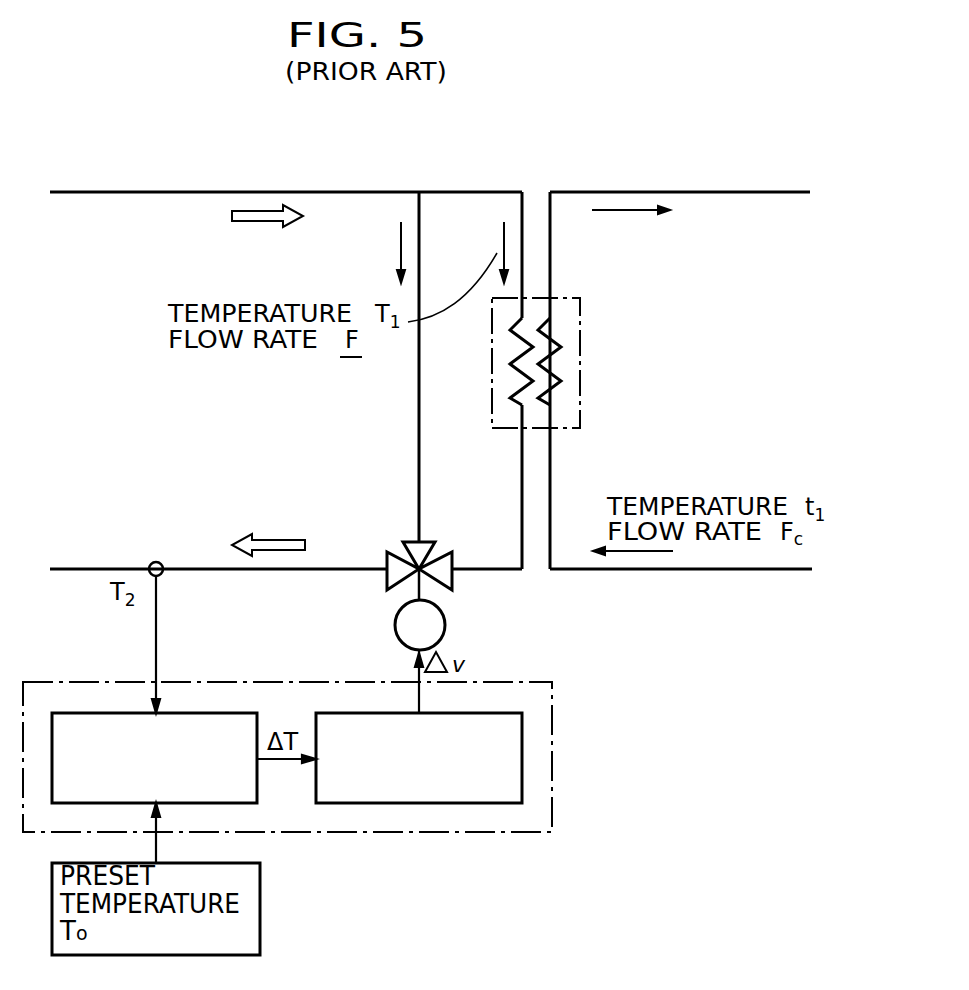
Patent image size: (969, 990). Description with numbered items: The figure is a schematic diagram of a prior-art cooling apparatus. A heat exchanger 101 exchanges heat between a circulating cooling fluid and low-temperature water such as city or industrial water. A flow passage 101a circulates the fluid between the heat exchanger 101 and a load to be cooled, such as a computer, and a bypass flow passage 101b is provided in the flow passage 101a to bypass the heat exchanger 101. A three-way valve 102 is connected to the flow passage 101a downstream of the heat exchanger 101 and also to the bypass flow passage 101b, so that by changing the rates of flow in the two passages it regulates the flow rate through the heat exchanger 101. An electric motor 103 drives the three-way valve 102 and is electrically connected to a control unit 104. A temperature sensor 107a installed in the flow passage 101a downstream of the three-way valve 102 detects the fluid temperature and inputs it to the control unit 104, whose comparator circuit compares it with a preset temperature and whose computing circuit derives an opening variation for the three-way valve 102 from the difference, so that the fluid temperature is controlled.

The heat exchanger 101 is at (580, 343).
The flow passage 101a is at (520, 210).
The bypass flow passage 101b is at (417, 210).
The three-way valve 102 is at (404, 542).
The electric motor 103 is at (395, 622).
The control unit 104 is at (50, 680).
The temperature sensor 107a is at (151, 562).